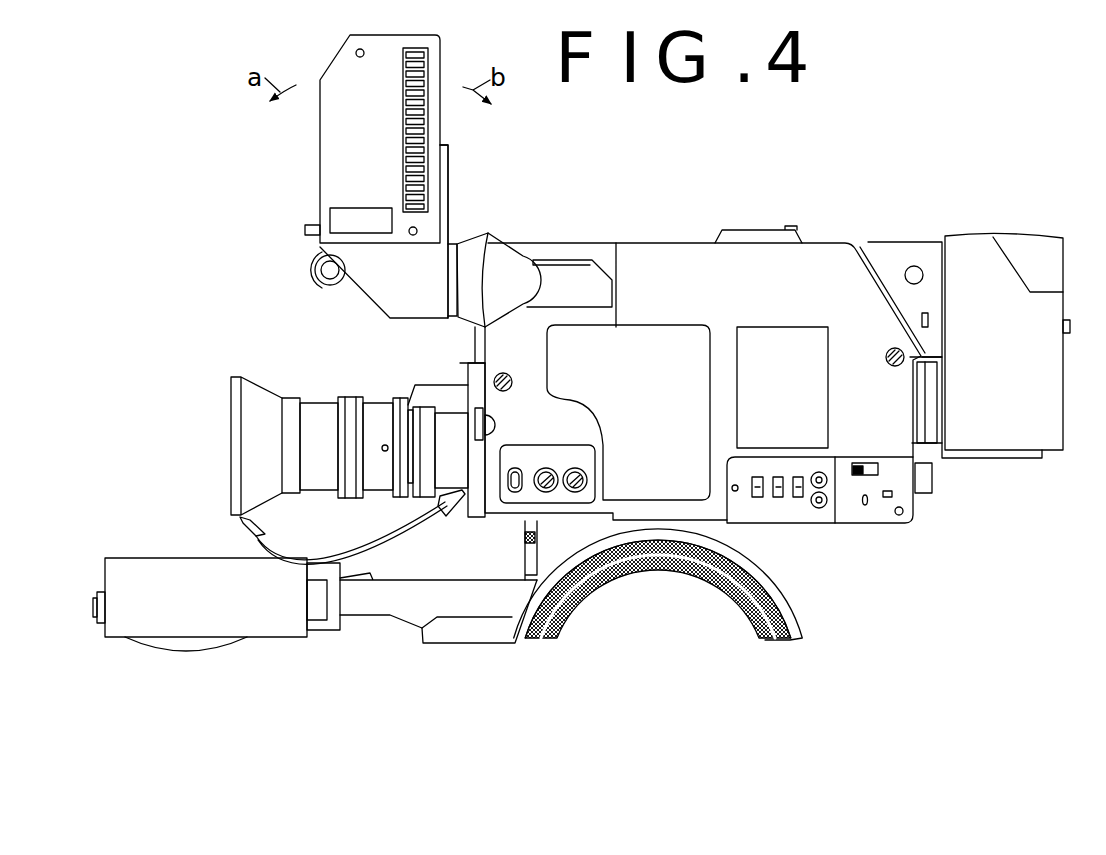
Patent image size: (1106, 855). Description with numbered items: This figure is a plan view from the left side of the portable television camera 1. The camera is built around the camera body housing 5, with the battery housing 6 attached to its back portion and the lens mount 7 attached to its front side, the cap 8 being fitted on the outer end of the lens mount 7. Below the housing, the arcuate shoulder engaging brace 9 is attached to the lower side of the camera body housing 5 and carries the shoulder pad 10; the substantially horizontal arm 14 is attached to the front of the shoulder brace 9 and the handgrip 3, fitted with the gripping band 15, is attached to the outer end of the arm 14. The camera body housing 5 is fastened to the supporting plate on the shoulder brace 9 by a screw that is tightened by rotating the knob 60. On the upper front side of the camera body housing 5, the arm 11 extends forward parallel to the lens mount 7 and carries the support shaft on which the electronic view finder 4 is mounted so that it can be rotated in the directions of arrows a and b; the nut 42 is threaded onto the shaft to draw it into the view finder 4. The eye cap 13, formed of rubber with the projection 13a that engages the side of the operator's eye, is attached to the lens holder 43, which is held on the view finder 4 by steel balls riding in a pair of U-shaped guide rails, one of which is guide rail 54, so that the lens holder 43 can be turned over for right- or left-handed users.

The portable television camera 1 is at (824, 241).
The handgrip 3 is at (182, 618).
The electronic view finder 4 is at (332, 138).
The camera body housing 5 is at (660, 263).
The battery housing 6 is at (1047, 370).
The lens mount 7 is at (322, 412).
The cap 8 is at (231, 428).
The arcuate shoulder engaging brace 9 is at (777, 588).
The shoulder pad 10 is at (657, 565).
The arm 11 is at (580, 247).
The eye cap 13 is at (470, 262).
The projection 13a is at (511, 265).
The horizontal arm 14 is at (372, 607).
The gripping band 15 is at (218, 637).
The nut 42 is at (333, 287).
The lens holder 43 is at (453, 247).
The guide rail 54 is at (445, 165).
The knob 60 is at (524, 537).